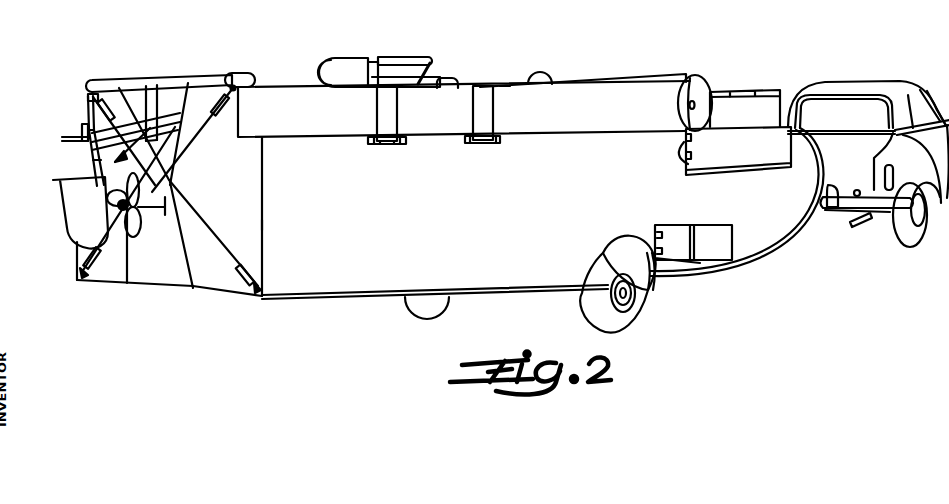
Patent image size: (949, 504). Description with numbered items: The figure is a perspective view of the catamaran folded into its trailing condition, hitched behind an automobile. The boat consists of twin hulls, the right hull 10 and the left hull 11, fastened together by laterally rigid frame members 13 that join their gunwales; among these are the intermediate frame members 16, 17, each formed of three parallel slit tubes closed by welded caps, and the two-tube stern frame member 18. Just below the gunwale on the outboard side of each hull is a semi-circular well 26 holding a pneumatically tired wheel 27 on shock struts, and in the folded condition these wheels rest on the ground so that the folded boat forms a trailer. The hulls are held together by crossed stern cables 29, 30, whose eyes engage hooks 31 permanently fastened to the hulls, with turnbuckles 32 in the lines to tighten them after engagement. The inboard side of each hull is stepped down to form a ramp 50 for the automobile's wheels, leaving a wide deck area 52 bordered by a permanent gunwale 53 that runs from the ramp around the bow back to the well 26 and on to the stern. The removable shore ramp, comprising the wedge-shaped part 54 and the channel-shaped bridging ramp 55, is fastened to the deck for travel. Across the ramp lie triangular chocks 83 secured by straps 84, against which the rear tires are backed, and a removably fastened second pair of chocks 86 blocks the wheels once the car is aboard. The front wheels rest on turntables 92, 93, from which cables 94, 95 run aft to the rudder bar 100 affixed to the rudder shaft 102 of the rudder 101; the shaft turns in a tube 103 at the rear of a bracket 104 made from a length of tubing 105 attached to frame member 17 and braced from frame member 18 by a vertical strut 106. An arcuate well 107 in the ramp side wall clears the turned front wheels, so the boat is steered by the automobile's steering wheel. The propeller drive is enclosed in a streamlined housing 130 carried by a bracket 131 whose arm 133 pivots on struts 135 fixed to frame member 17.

The right hull 10 is at (302, 210).
The left hull 11 is at (77, 249).
The laterally rigid frame members 13 is at (168, 85).
The intermediate frame member 16 is at (720, 92).
The intermediate frame member 17 is at (448, 80).
The stern frame member 18 is at (126, 80).
The semi-circular well 26 is at (652, 280).
The pneumatically tired wheel 27 is at (420, 302).
The stern cable 29 is at (128, 250).
The stern cable 30 is at (200, 214).
The hooks 31 is at (229, 75).
The turnbuckles 32 is at (103, 112).
The ramp 50 is at (600, 131).
The deck area 52 is at (371, 216).
The permanent gunwale 53 is at (505, 287).
The removable ramp part 54 is at (715, 240).
The channel-shaped ramp 55 is at (738, 151).
The chocks 83 is at (377, 112).
The straps 84 is at (390, 144).
The second pair of chocks 86 is at (493, 112).
The turntable 92 is at (702, 90).
The turntable 93 is at (548, 82).
The cable 94 is at (650, 82).
The cable 95 is at (506, 86).
The rudder bar 100 is at (82, 143).
The rudder 101 is at (74, 216).
The rudder shaft 102 is at (82, 128).
The tube 103 is at (78, 172).
The bracket 104 is at (112, 199).
The length of tubing 105 is at (187, 150).
The vertical strut 106 is at (160, 96).
The arcuate well 107 is at (683, 138).
The housing 130 is at (164, 210).
The bracket 131 is at (376, 58).
The arm 133 is at (414, 44).
The struts 135 is at (432, 66).